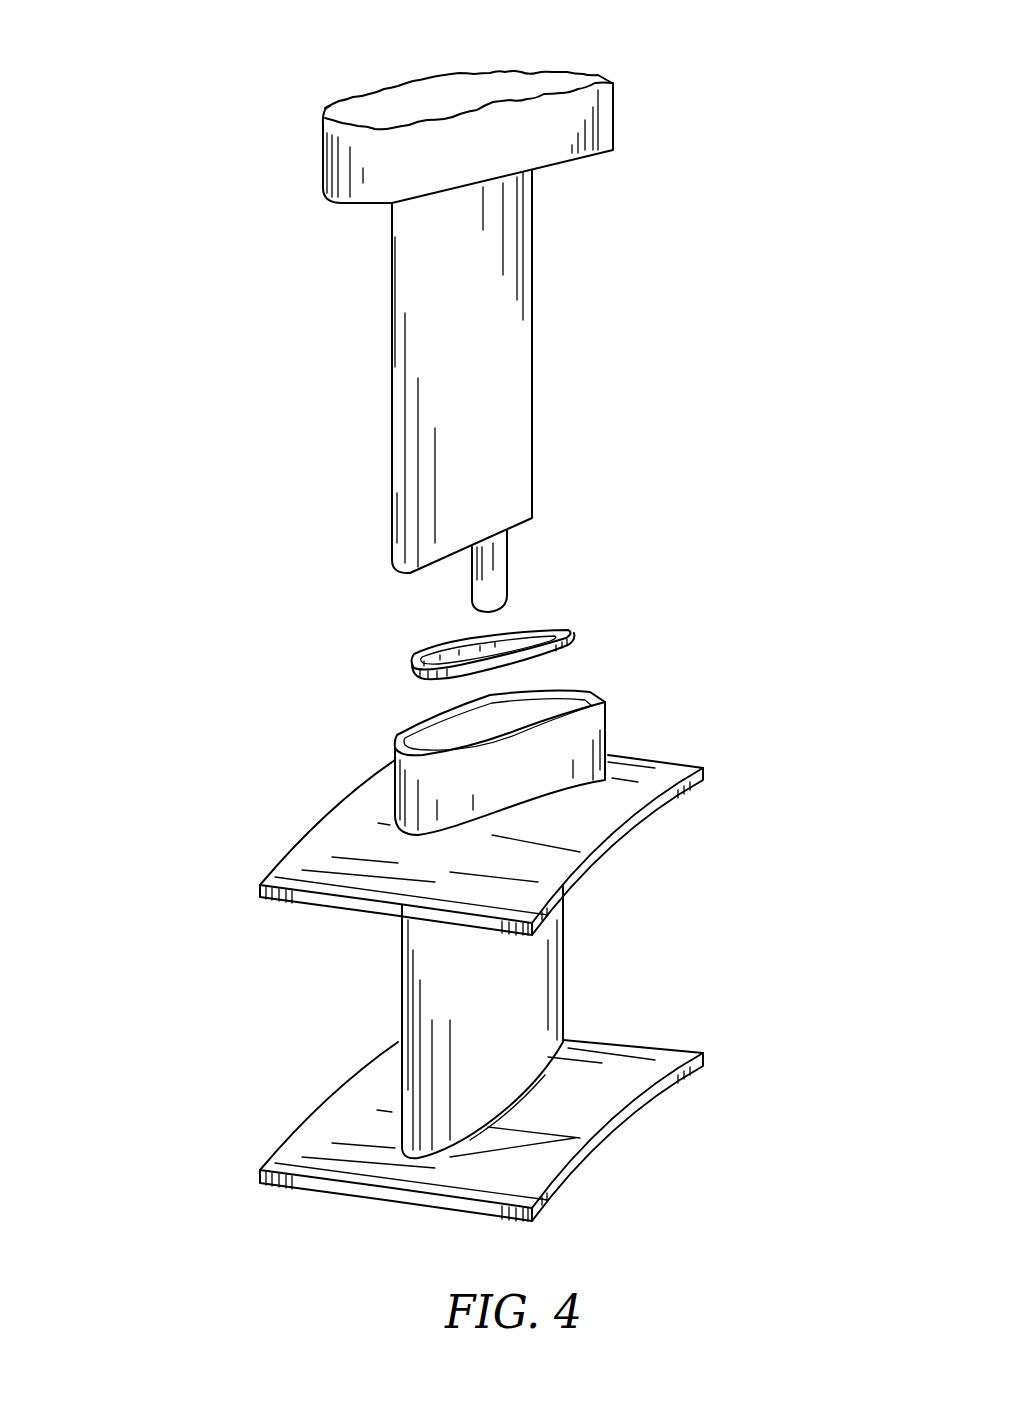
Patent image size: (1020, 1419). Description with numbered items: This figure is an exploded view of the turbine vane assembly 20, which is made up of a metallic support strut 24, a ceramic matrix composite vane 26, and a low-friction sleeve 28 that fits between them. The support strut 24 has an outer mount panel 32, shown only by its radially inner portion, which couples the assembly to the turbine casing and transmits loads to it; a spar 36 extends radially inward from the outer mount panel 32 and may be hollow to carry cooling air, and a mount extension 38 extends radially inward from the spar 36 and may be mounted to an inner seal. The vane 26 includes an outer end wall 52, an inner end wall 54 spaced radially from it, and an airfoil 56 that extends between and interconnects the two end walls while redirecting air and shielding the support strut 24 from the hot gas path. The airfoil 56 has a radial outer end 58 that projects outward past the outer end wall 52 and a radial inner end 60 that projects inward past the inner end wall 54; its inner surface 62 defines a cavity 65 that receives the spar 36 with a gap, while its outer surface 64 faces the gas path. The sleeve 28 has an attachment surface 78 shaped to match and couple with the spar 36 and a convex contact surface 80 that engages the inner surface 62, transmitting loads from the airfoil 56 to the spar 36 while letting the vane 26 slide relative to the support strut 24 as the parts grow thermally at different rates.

The turbine vane assembly 20 is at (197, 130).
The support strut 24 is at (322, 351).
The outer mount panel 32 is at (620, 122).
The spar 36 is at (540, 317).
The mount extension 38 is at (525, 578).
The sleeve 28 is at (395, 667).
The attachment surface 78 is at (495, 643).
The contact surface 80 is at (543, 647).
The vane 26 is at (293, 942).
The radial outer end 58 is at (605, 718).
The inner surface 62 is at (412, 735).
The cavity 65 is at (452, 730).
The outer end wall 52 is at (680, 765).
The airfoil 56 is at (570, 992).
The outer surface 64 is at (505, 1068).
The inner end wall 54 is at (680, 1052).
The radial inner end 60 is at (396, 1215).